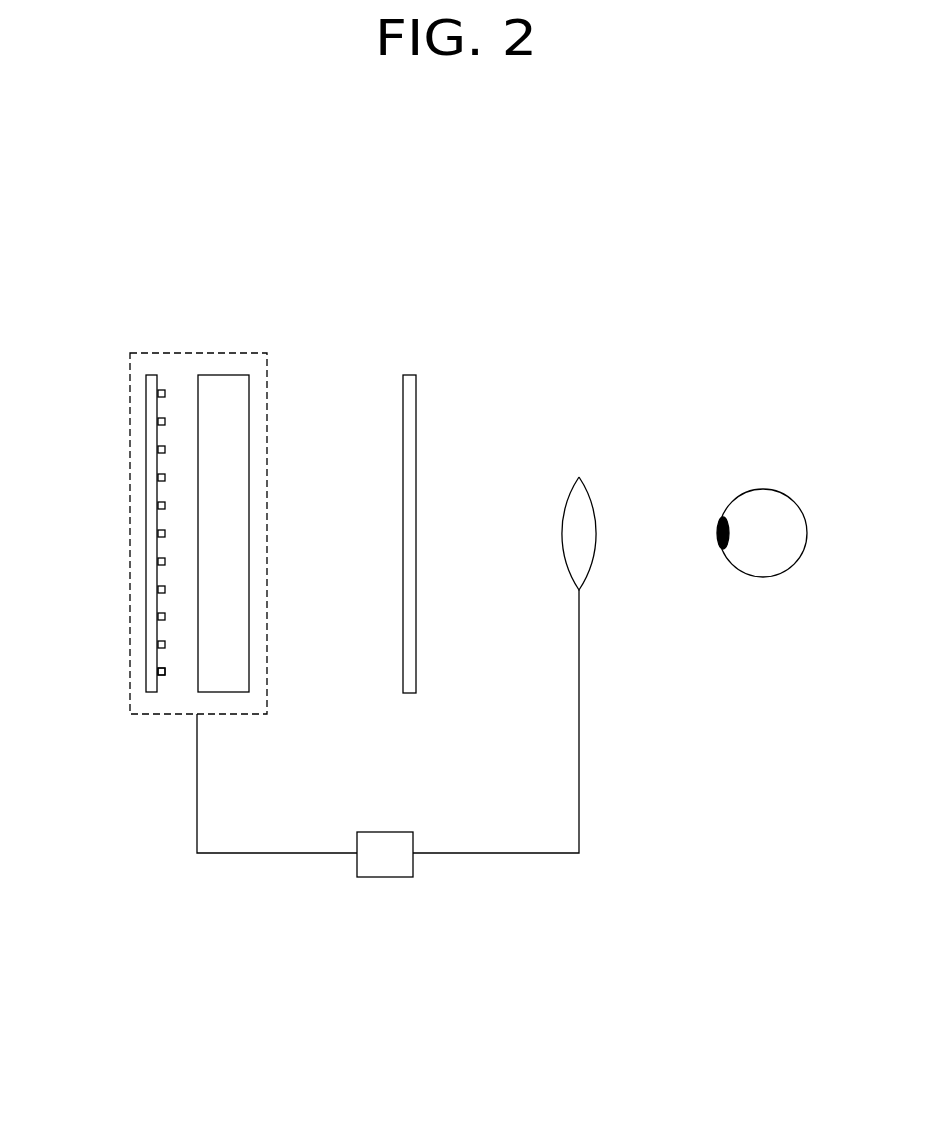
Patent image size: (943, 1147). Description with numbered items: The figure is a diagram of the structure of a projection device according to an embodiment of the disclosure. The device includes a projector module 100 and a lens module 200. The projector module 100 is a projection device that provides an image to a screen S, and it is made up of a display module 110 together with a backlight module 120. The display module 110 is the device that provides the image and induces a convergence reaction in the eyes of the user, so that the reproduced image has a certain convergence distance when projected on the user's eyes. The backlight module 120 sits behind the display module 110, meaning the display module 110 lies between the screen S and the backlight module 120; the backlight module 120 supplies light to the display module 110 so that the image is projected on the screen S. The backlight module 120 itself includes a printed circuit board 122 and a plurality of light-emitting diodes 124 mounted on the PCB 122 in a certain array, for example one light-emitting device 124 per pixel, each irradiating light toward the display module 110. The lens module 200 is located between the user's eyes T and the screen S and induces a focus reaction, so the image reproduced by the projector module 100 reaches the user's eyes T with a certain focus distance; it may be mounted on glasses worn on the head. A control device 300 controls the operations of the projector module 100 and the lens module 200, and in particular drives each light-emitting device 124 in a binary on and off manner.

The projector module 100 is at (242, 720).
The display module 110 is at (232, 370).
The backlight module 120 is at (155, 370).
The printed circuit board 122 is at (157, 673).
The light-emitting diode 124 is at (165, 680).
The lens module 200 is at (587, 462).
The control device 300 is at (399, 886).
The screen S is at (413, 702).
The user's eyes T is at (777, 480).